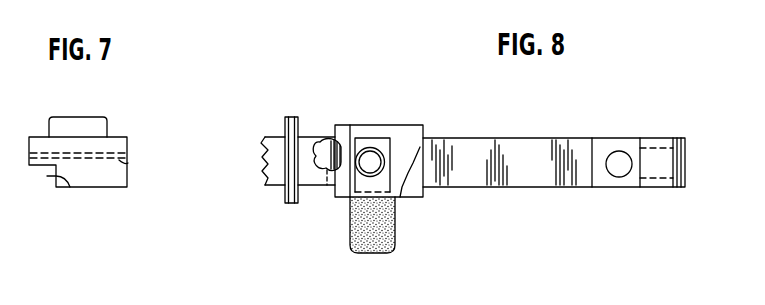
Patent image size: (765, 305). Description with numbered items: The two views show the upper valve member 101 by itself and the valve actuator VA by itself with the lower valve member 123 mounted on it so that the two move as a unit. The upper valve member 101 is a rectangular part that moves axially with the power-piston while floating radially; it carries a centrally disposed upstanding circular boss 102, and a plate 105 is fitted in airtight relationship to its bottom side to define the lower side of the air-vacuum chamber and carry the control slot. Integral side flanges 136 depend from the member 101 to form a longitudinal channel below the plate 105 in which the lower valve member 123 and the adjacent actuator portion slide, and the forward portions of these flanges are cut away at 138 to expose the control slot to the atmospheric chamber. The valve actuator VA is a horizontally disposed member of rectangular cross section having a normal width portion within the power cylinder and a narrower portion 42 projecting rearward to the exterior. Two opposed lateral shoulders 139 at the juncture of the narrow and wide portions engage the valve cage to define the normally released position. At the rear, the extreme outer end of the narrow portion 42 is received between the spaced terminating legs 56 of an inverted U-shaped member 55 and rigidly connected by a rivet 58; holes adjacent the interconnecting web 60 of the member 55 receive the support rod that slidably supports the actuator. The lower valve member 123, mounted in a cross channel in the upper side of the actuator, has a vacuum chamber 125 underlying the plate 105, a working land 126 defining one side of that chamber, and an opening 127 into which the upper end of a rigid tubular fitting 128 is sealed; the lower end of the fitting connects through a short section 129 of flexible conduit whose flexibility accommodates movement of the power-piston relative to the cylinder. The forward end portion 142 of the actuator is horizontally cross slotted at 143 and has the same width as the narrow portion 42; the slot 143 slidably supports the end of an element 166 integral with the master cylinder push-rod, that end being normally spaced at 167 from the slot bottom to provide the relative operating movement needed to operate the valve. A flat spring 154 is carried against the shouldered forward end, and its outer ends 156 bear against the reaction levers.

In FIG. 7, the upper valve member 101 is at (129, 137).
In FIG. 7, the circular boss 102 is at (97, 122).
In FIG. 7, the plate 105 is at (127, 157).
In FIG. 7, the side flange 136 is at (123, 187).
In FIG. 7, the cut-away opening 138 is at (72, 187).
In FIG. 8, the narrower portion 42 is at (500, 140).
In FIG. 8, the inverted U-shaped member 55 is at (657, 137).
In FIG. 8, the terminating leg 56 is at (609, 137).
In FIG. 8, the rivet 58 is at (623, 170).
In FIG. 8, the interconnecting web 60 is at (670, 180).
In FIG. 8, the lower valve member 123 is at (412, 140).
In FIG. 8, the vacuum chamber 125 is at (383, 142).
In FIG. 8, the working land 126 is at (372, 148).
In FIG. 8, the opening 127 is at (390, 175).
In FIG. 8, the rigid tubular fitting 128 is at (355, 205).
In FIG. 8, the flexible conduit section 129 is at (393, 238).
In FIG. 8, the lateral shoulders 139 is at (438, 190).
In FIG. 8, the forward end portion 142 is at (310, 188).
In FIG. 8, the cross slot 143 is at (350, 145).
In FIG. 8, the flat spring 154 is at (300, 101).
In FIG. 8, the outer ends of flat spring 156 is at (280, 187).
In FIG. 8, the element 166 is at (332, 142).
In FIG. 8, the space 167 is at (330, 186).
In FIG. 8, the valve actuator VA is at (519, 192).